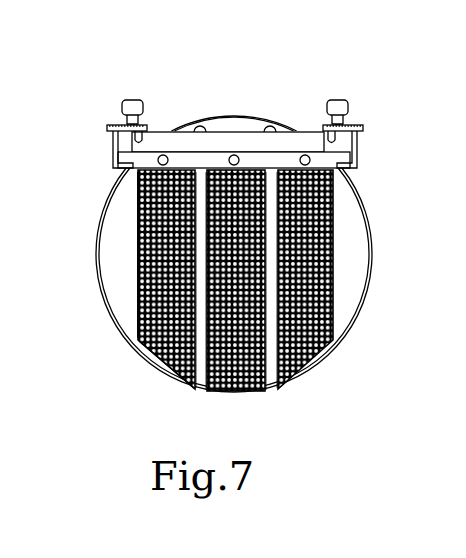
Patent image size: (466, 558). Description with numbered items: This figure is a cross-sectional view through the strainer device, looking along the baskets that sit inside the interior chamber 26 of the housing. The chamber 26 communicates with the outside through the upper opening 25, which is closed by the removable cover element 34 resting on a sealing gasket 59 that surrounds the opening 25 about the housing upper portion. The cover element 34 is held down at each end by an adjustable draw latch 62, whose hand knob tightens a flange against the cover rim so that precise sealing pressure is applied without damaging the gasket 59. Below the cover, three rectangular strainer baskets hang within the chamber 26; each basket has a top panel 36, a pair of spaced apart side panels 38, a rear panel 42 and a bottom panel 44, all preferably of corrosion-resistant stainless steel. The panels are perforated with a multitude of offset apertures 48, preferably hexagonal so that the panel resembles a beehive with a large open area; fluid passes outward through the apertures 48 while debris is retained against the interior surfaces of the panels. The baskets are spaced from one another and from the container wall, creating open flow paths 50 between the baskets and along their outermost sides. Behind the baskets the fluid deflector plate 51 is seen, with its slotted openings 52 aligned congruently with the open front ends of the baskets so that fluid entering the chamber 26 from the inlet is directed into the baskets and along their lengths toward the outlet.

The upper opening 25 is at (207, 170).
The interior chamber 26 is at (340, 316).
The removable cover element 34 is at (304, 133).
The top panel 36 is at (181, 170).
The side panel 38 is at (200, 290).
The rear panel 42 is at (136, 318).
The bottom panel 44 is at (163, 360).
The apertures 48 is at (138, 217).
The open flow paths 50 is at (137, 288).
The fluid deflector plate 51 is at (347, 293).
The slotted openings 52 is at (333, 266).
The sealing gasket 59 is at (346, 158).
The adjustable draw latch 62 is at (127, 95).